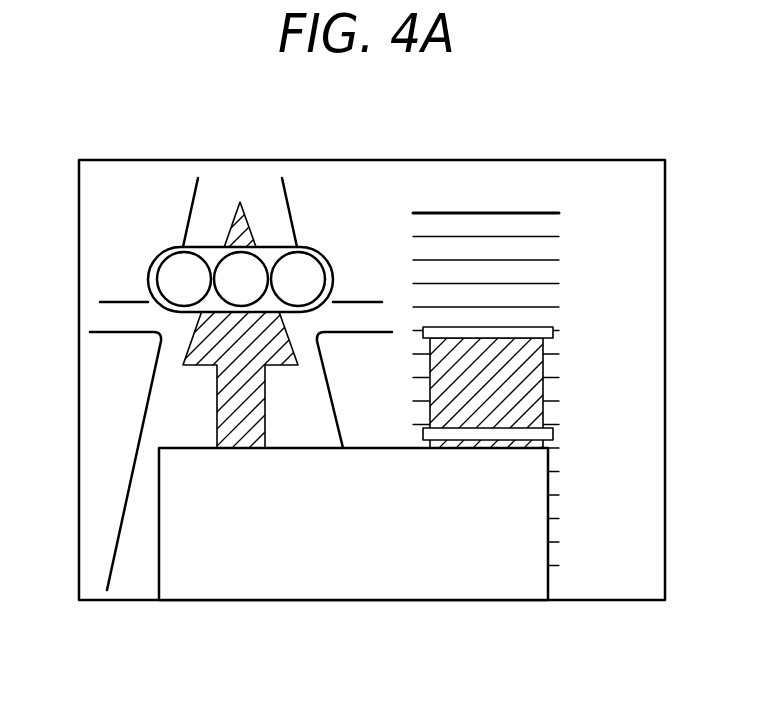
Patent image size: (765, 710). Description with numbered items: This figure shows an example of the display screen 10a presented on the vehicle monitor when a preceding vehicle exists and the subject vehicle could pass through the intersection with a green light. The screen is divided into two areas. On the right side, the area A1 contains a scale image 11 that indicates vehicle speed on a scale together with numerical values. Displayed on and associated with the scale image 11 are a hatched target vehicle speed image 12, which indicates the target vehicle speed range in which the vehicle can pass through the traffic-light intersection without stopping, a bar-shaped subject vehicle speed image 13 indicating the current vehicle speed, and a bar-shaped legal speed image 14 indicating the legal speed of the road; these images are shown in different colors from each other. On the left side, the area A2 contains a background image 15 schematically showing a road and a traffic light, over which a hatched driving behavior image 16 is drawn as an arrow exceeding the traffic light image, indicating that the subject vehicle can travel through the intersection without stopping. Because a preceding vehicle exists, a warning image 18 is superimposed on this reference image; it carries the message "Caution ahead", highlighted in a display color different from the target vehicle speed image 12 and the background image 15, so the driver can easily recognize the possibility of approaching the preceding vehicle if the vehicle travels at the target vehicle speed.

The display screen 10a is at (363, 178).
The scale image 11 is at (545, 225).
The target vehicle speed image 12 is at (545, 388).
The subject vehicle speed image 13 is at (545, 407).
The legal speed image 14 is at (528, 325).
The background image 15 is at (163, 382).
The driving behavior image 16 is at (210, 435).
The warning image 18 is at (158, 553).
The area A1 is at (523, 185).
The area A2 is at (229, 192).